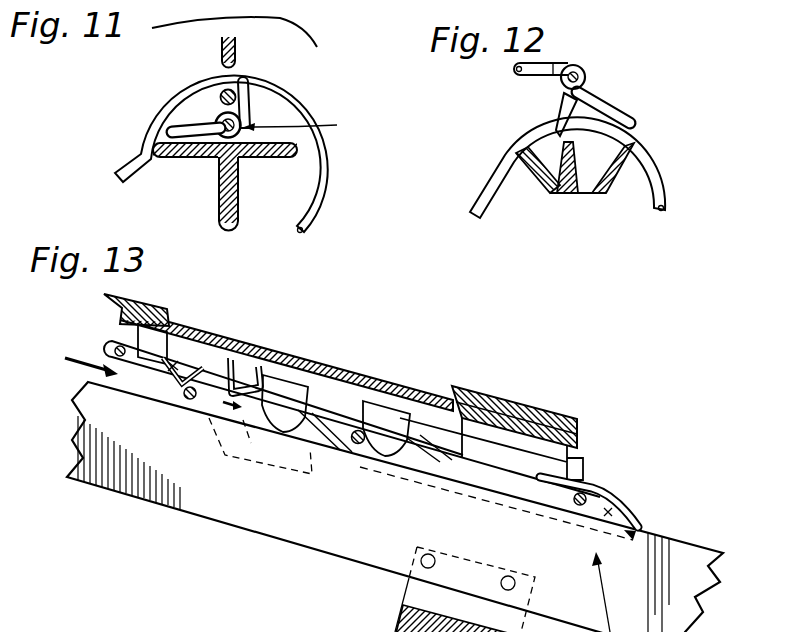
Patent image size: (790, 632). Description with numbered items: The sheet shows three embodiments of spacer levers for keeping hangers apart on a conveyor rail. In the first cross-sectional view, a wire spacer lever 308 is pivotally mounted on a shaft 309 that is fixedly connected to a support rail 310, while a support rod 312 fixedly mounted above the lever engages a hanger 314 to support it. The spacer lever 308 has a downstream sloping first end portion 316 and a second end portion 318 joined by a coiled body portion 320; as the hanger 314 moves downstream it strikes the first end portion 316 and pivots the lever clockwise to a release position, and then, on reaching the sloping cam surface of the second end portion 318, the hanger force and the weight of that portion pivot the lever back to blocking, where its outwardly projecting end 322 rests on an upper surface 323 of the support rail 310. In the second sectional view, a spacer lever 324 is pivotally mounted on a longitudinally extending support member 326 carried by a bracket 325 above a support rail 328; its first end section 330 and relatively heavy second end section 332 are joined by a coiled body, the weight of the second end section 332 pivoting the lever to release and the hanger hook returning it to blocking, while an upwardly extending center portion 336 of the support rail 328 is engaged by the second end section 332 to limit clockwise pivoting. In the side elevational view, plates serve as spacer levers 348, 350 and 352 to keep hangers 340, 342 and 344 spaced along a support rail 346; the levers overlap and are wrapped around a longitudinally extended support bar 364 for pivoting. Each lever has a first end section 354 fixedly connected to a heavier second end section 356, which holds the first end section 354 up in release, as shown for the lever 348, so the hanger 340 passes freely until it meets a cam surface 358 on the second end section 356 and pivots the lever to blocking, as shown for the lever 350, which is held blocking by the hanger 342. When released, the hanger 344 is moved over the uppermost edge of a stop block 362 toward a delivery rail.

In FIG. 11, the spacer lever 308 is at (310, 115).
In FIG. 11, the shaft 309 is at (216, 118).
In FIG. 11, the support rail 310 is at (238, 204).
In FIG. 11, the support rod 312 is at (245, 106).
In FIG. 11, the hanger 314 is at (320, 197).
In FIG. 11, the first end portion 316 is at (250, 108).
In FIG. 11, the second end portion 318 is at (197, 158).
In FIG. 11, the coiled body portion 320 is at (238, 158).
In FIG. 11, the outwardly projecting end 322 is at (166, 131).
In FIG. 11, the upper surface 323 is at (156, 150).
In FIG. 12, the spacer lever 324 is at (594, 76).
In FIG. 12, the bracket 325 is at (517, 72).
In FIG. 12, the support member 326 is at (574, 70).
In FIG. 12, the support rail 328 is at (593, 195).
In FIG. 12, the first end section 330 is at (565, 100).
In FIG. 12, the second end section 332 is at (620, 110).
In FIG. 12, the center portion 336 is at (565, 193).
In FIG. 13, the hanger 340 is at (187, 399).
In FIG. 13, the hanger 342 is at (355, 446).
In FIG. 13, the hanger 344 is at (580, 508).
In FIG. 13, the support rail 346 is at (237, 515).
In FIG. 13, the spacer lever 348 is at (217, 337).
In FIG. 13, the spacer lever 350 is at (322, 366).
In FIG. 13, the spacer lever 352 is at (432, 395).
In FIG. 13, the first end section 354 is at (278, 390).
In FIG. 13, the second end section 356 is at (410, 462).
In FIG. 13, the cam surface 358 is at (186, 398).
In FIG. 13, the stop block 362 is at (612, 510).
In FIG. 13, the support bar 364 is at (116, 344).